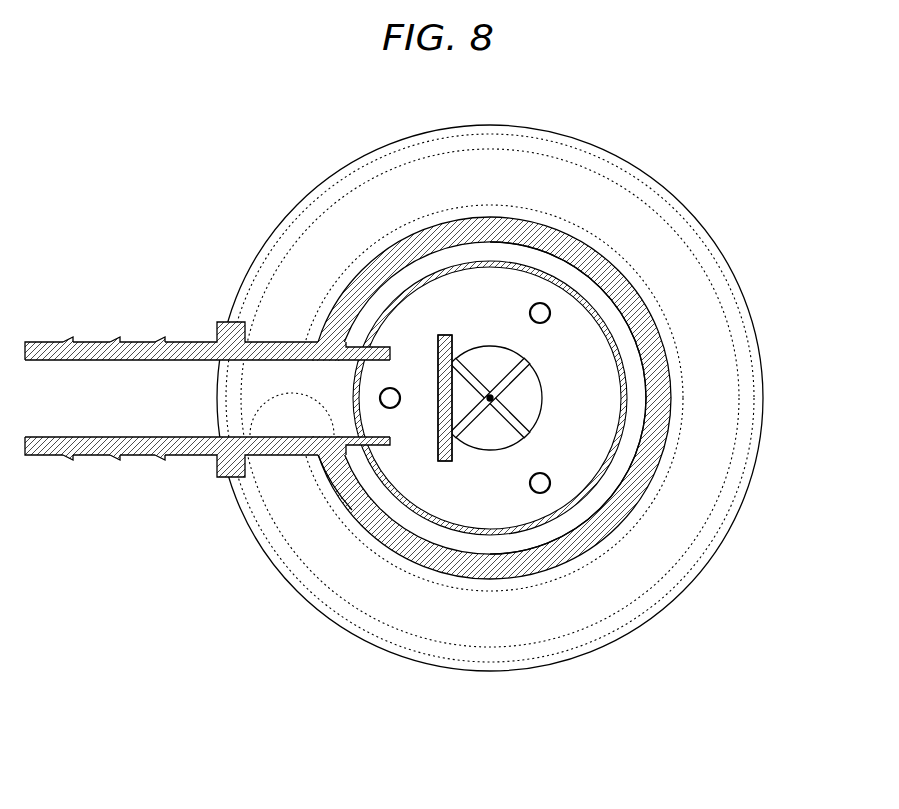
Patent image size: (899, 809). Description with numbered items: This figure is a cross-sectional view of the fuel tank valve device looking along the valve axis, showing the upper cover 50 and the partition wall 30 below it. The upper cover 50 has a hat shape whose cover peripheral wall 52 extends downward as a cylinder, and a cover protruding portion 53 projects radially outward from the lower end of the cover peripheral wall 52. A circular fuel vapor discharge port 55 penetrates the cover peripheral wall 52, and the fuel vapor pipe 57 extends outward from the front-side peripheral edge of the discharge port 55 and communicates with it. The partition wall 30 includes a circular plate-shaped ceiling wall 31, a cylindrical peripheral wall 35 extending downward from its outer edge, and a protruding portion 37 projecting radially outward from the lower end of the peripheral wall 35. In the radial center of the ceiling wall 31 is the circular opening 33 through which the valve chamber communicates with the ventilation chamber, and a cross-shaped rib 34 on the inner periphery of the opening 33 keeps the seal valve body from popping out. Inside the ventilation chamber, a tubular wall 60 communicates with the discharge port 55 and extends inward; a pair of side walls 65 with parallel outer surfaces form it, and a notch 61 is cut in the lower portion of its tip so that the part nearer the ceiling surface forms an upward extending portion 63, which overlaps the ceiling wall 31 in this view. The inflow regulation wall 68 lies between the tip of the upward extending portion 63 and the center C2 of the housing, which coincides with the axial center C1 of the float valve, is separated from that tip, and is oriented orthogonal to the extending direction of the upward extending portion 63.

The partition wall 30 is at (683, 233).
The ceiling wall 31 is at (633, 338).
The opening 33 is at (628, 462).
The rib 34 is at (490, 398).
The peripheral wall 35 is at (627, 400).
The protruding portion 37 is at (640, 374).
The upper cover 50 is at (254, 259).
The cover peripheral wall 52 is at (615, 596).
The cover protruding portion 53 is at (548, 376).
The fuel vapor discharge port 55 is at (228, 470).
The fuel vapor pipe 57 is at (133, 457).
The tubular wall 60 is at (381, 345).
The notch 61 is at (318, 455).
The upward extending portion 63 is at (382, 447).
The side walls 65 is at (383, 347).
The inflow regulation wall 68 is at (440, 462).
The axial center of the float valve C1 is at (599, 296).
The center of the housing C2 is at (490, 398).